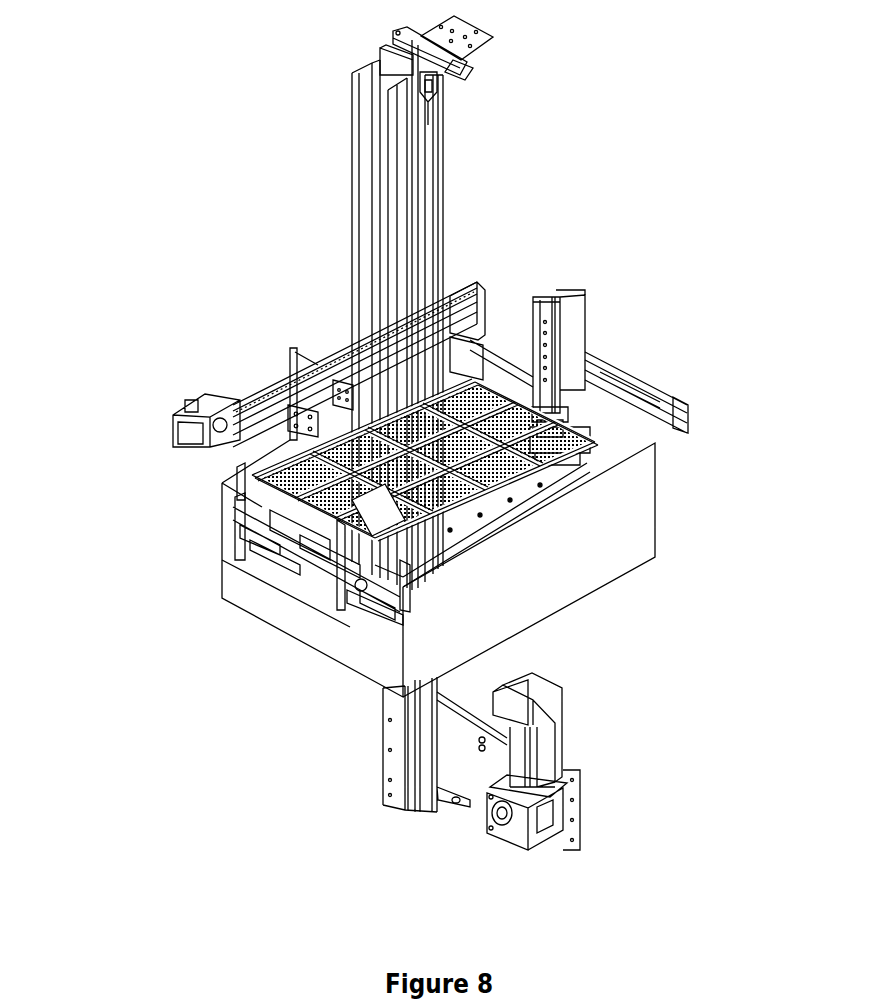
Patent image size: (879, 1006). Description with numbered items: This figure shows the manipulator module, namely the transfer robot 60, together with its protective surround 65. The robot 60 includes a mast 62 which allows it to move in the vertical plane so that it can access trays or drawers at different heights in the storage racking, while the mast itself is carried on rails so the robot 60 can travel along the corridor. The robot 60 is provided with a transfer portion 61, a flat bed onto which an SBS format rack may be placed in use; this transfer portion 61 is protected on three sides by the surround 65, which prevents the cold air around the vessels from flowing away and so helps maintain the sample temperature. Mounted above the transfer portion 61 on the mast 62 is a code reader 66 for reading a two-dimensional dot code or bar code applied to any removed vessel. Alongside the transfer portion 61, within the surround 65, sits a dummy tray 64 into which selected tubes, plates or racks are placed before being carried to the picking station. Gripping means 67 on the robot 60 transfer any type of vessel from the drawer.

The robot 60 is at (568, 207).
The transfer portion 61 is at (335, 446).
The mast 62 is at (355, 192).
The dummy tray 64 is at (233, 532).
The surround 65 is at (432, 640).
The code reader 66 is at (225, 485).
The gripping means 67 is at (575, 428).